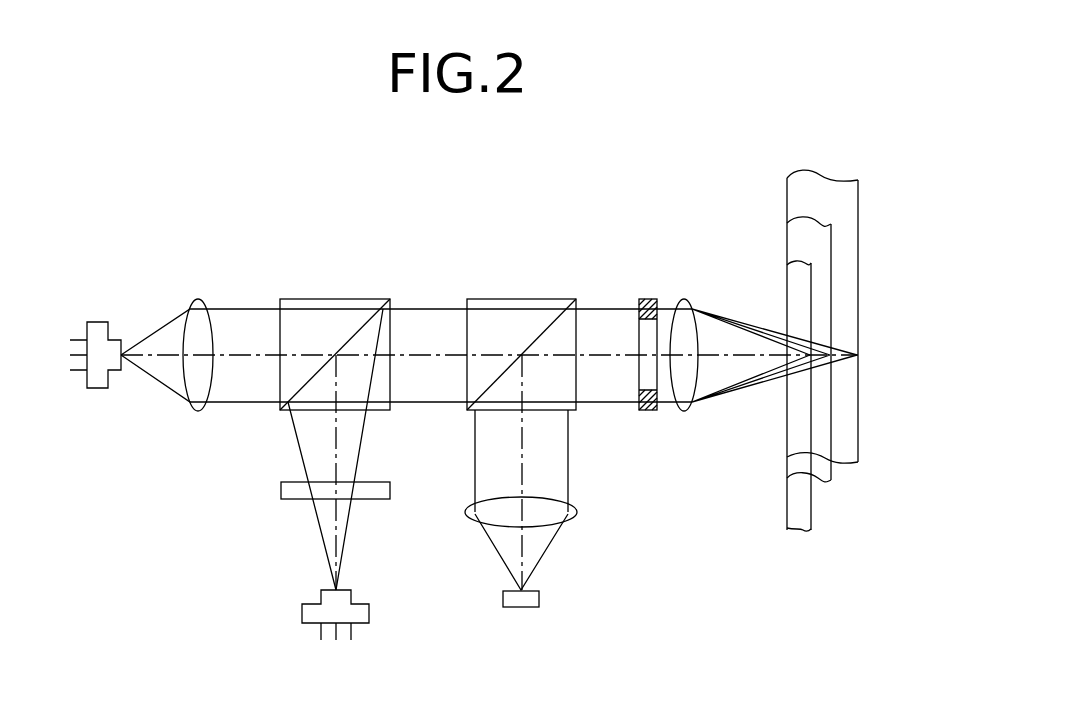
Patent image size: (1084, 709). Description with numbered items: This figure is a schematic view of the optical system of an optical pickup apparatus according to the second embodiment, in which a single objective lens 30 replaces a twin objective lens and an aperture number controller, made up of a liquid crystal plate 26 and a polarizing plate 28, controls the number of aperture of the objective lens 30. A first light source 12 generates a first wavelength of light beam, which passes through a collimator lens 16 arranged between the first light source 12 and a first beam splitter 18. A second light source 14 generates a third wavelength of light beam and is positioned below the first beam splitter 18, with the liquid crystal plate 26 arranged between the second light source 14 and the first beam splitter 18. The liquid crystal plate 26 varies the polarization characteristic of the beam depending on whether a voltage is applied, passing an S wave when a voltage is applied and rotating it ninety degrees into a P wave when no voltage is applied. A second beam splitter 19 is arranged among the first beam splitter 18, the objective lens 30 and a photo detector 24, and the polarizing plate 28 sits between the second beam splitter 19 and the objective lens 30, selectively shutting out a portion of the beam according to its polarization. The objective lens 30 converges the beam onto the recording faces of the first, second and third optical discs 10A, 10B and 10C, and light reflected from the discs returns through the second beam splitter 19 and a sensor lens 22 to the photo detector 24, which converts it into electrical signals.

The first light source 12 is at (106, 326).
The collimator lens 16 is at (198, 300).
The first beam splitter 18 is at (388, 300).
The liquid crystal plate 26 is at (367, 483).
The second light source 14 is at (369, 607).
The second beam splitter 19 is at (574, 300).
The sensor lens 22 is at (567, 512).
The photo detector 24 is at (533, 606).
The polarizing plate 28 is at (654, 300).
The objective lens 30 is at (688, 300).
The first optical disc 10A is at (800, 505).
The second optical disc 10B is at (825, 326).
The third optical disc 10C is at (848, 262).